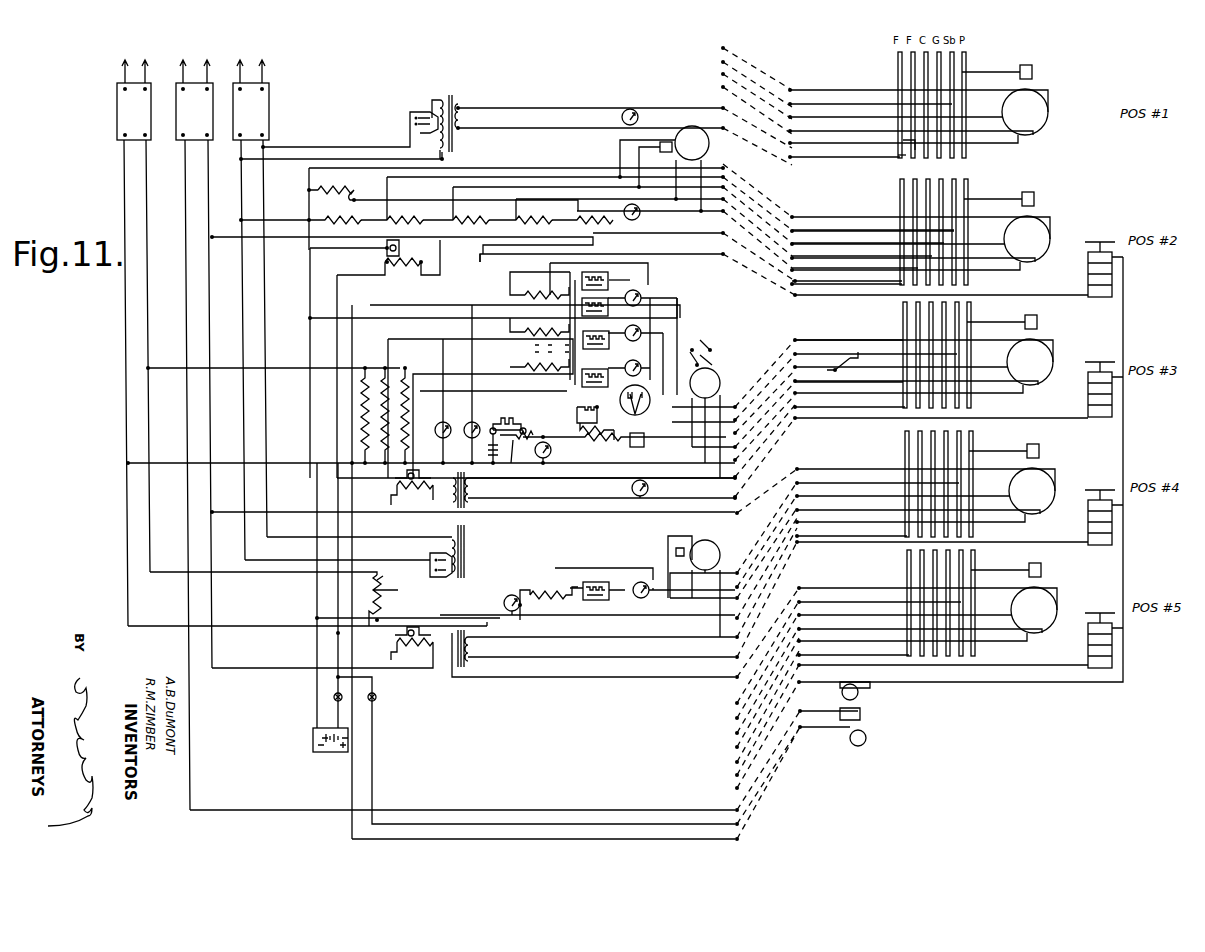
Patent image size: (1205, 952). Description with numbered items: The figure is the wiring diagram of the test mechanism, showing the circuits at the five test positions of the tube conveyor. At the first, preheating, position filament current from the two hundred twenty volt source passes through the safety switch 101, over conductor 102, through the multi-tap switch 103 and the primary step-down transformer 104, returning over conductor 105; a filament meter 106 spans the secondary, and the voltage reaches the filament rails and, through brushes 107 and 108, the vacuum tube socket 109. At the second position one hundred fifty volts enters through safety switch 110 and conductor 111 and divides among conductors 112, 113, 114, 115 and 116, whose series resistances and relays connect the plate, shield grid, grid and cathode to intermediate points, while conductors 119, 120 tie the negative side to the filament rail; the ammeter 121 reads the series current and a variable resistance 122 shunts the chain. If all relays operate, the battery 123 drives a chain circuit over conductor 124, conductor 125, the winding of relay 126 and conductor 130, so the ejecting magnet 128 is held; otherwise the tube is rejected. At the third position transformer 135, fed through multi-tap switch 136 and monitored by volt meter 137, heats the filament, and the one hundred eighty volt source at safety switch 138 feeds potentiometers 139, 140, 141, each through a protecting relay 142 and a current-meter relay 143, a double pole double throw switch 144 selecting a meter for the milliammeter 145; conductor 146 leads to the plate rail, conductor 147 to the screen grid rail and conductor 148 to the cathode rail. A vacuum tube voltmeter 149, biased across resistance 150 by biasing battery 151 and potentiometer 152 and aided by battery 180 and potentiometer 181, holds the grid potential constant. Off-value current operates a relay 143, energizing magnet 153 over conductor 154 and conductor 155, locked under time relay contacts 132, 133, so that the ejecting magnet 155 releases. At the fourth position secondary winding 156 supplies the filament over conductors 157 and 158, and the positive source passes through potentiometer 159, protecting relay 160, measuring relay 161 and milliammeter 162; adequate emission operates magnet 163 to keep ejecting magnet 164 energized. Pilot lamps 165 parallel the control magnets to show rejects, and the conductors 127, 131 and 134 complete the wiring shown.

The safety switch 101 is at (249, 299).
The conductor 102 is at (323, 148).
The multi-tap switch 103 is at (411, 118).
The primary step-down transformer 104 is at (447, 111).
The conductor 105 is at (304, 165).
The filament meter 106 is at (626, 115).
The brush 107 is at (902, 143).
The brush 108 is at (900, 157).
The vacuum tube socket 109 is at (1040, 125).
The safety switch 110 is at (192, 424).
The conductor 111 is at (300, 222).
The conductor 112 is at (802, 220).
The conductor 113 is at (828, 230).
The conductor 114 is at (855, 243).
The conductor 115 is at (838, 256).
The conductor 116 is at (870, 268).
The conductor 119 is at (401, 246).
The conductor 120 is at (856, 282).
The ammeter 121 is at (638, 211).
The variable resistance 122 is at (342, 192).
The battery 123 is at (330, 616).
The conductor 124 is at (310, 293).
The conductor 125 is at (474, 264).
The relay 126 is at (415, 275).
The conductor 127 is at (344, 290).
The ejecting magnet 128 is at (1114, 280).
The conductor 130 is at (329, 345).
The conductor 131 is at (374, 758).
The time relay contact 132 is at (858, 712).
The time relay contact 133 is at (838, 729).
The conductor 134 is at (360, 798).
The transformer 135 is at (468, 552).
The multi-tap switch 136 is at (428, 560).
The volt meter 137 is at (629, 488).
The safety switch 138 is at (130, 332).
The potentiometer 139 is at (360, 405).
The potentiometer 140 is at (380, 418).
The potentiometer 141 is at (398, 431).
The protecting relay 142 is at (544, 290).
The plate current measuring meter 143 is at (592, 270).
The double pole double throw switch 144 is at (625, 299).
The milliammeter 145 is at (641, 298).
The conductor 146 is at (820, 336).
The conductor 147 is at (828, 348).
The conductor 148 is at (820, 385).
The vacuum tube voltmeter 149 is at (620, 398).
The resistance 150 is at (600, 439).
The biasing battery 151 is at (577, 412).
The potentiometer 152 is at (577, 432).
The magnet 153 is at (405, 500).
The conductor 154 is at (345, 578).
The ejecting magnet 155 is at (428, 314).
The secondary winding 156 is at (485, 670).
The conductor 157 is at (625, 657).
The conductor 158 is at (582, 677).
The potentiometer 159 is at (383, 603).
The protecting relay 160 is at (549, 577).
The measuring relay 161 is at (599, 580).
The milliammeter 162 is at (619, 598).
The magnet 163 is at (413, 658).
The ejecting magnet 164 is at (1114, 522).
The pilot lamp 165 is at (385, 251).
The battery 180 is at (507, 421).
The potentiometer 181 is at (505, 457).